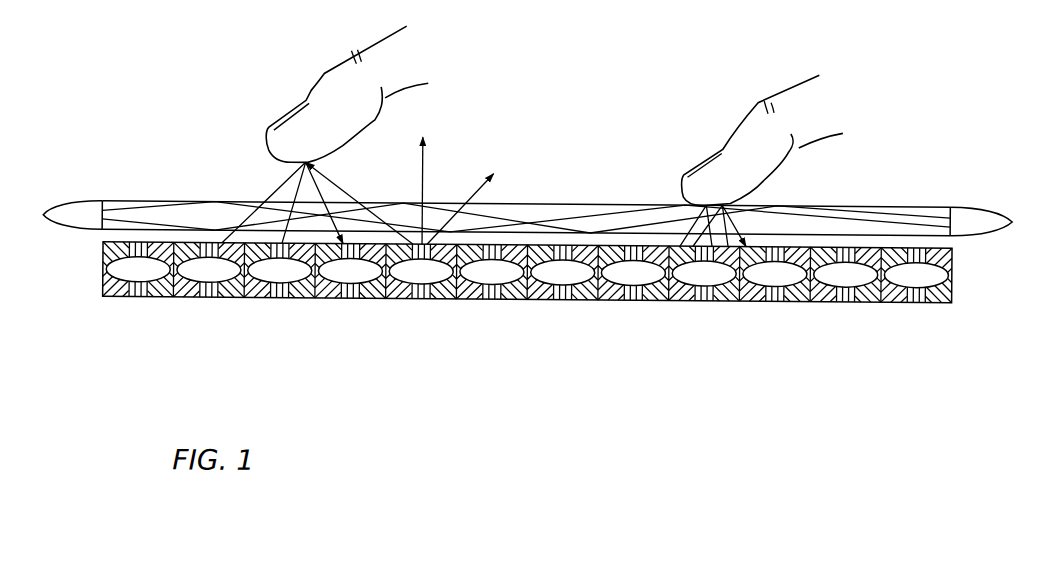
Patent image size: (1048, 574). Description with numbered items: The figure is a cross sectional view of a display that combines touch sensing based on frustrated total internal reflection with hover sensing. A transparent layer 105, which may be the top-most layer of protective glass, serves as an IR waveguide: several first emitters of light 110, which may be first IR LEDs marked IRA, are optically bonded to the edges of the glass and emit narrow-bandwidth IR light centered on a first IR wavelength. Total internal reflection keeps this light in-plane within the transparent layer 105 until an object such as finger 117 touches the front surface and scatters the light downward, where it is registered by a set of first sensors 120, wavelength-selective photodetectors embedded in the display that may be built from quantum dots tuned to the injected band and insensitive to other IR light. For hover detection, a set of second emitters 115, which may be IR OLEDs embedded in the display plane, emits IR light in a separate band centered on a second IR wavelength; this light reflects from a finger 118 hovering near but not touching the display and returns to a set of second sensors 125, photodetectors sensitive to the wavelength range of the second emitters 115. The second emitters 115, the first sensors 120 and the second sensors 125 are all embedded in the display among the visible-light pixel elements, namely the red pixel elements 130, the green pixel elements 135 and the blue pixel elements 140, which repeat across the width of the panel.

The transparent layer 105 is at (132, 203).
The first emitters of light 110 is at (77, 205).
The second emitters 115 is at (527, 272).
The finger 117 is at (733, 122).
The finger 118 is at (318, 79).
The first sensors 120 is at (598, 273).
The second sensors 125 is at (456, 272).
The red pixel elements 130 is at (112, 300).
The green pixel elements 135 is at (210, 300).
The blue pixel elements 140 is at (160, 300).